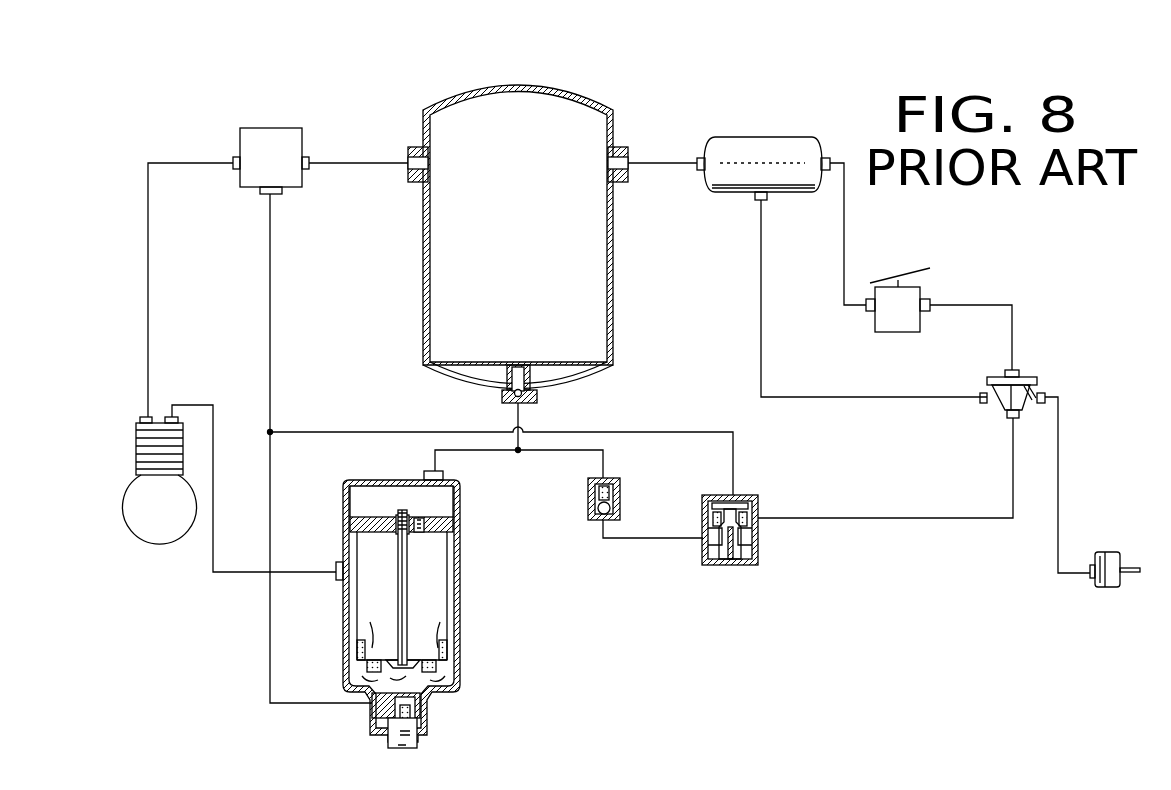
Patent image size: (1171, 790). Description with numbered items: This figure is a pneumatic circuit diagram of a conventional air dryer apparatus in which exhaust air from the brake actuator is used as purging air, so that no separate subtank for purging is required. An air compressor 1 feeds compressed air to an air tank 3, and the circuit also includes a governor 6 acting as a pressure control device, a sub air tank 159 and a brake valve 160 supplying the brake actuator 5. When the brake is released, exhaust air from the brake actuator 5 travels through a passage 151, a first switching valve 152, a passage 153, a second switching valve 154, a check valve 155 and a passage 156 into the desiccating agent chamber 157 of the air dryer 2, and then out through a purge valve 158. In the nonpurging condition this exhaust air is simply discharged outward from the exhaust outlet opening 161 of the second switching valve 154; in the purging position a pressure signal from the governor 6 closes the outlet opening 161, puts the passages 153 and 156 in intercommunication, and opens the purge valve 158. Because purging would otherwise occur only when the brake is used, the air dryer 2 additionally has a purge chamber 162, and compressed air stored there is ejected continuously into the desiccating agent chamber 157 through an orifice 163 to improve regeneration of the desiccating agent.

The air compressor 1 is at (160, 542).
The air dryer 2 is at (460, 638).
The air tank 3 is at (423, 267).
The brake actuator 5 is at (1117, 590).
The governor 6 is at (295, 128).
The passage 151 is at (1058, 530).
The first switching valve 152 is at (1037, 382).
The passage 153 is at (921, 520).
The second switching valve 154 is at (758, 545).
The check valve 155 is at (590, 505).
The passage 156 is at (540, 455).
The desiccating agent chamber 157 is at (425, 592).
The purge valve 158 is at (372, 725).
The sub air tank 159 is at (776, 137).
The brake valve 160 is at (878, 335).
The exhaust outlet opening 161 is at (730, 568).
The purge chamber 162 is at (363, 489).
The orifice 163 is at (415, 520).